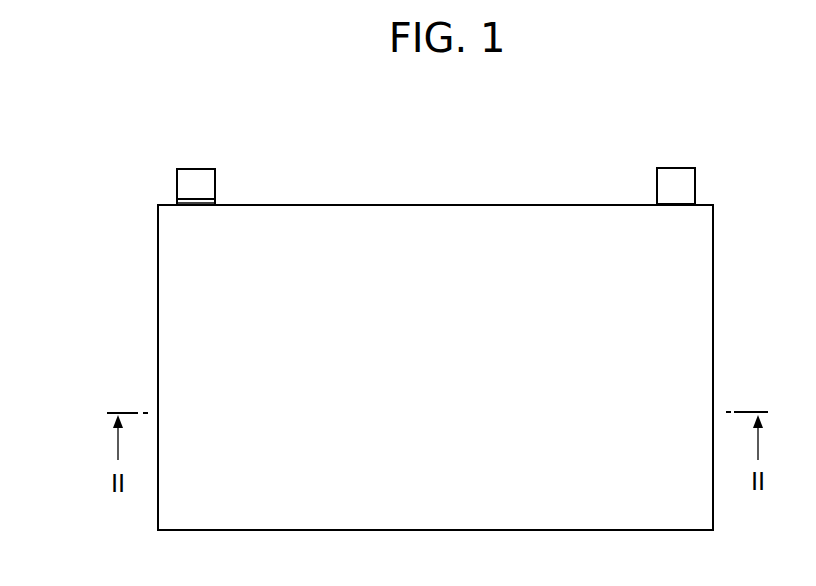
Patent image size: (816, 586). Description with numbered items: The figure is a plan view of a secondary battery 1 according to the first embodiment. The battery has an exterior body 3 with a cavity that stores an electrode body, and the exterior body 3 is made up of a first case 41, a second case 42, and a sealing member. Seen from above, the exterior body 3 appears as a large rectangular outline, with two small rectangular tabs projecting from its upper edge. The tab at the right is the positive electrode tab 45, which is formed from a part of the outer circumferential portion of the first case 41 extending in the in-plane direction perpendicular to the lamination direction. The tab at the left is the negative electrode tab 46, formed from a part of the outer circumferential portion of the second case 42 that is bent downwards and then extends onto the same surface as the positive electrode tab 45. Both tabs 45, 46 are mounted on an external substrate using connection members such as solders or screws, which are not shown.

The secondary battery 1 is at (140, 271).
The exterior body 3 is at (138, 313).
The second case 42 is at (180, 250).
The negative electrode tab 46 is at (196, 187).
The positive electrode tab 45 is at (676, 180).
The first case 41 is at (676, 186).